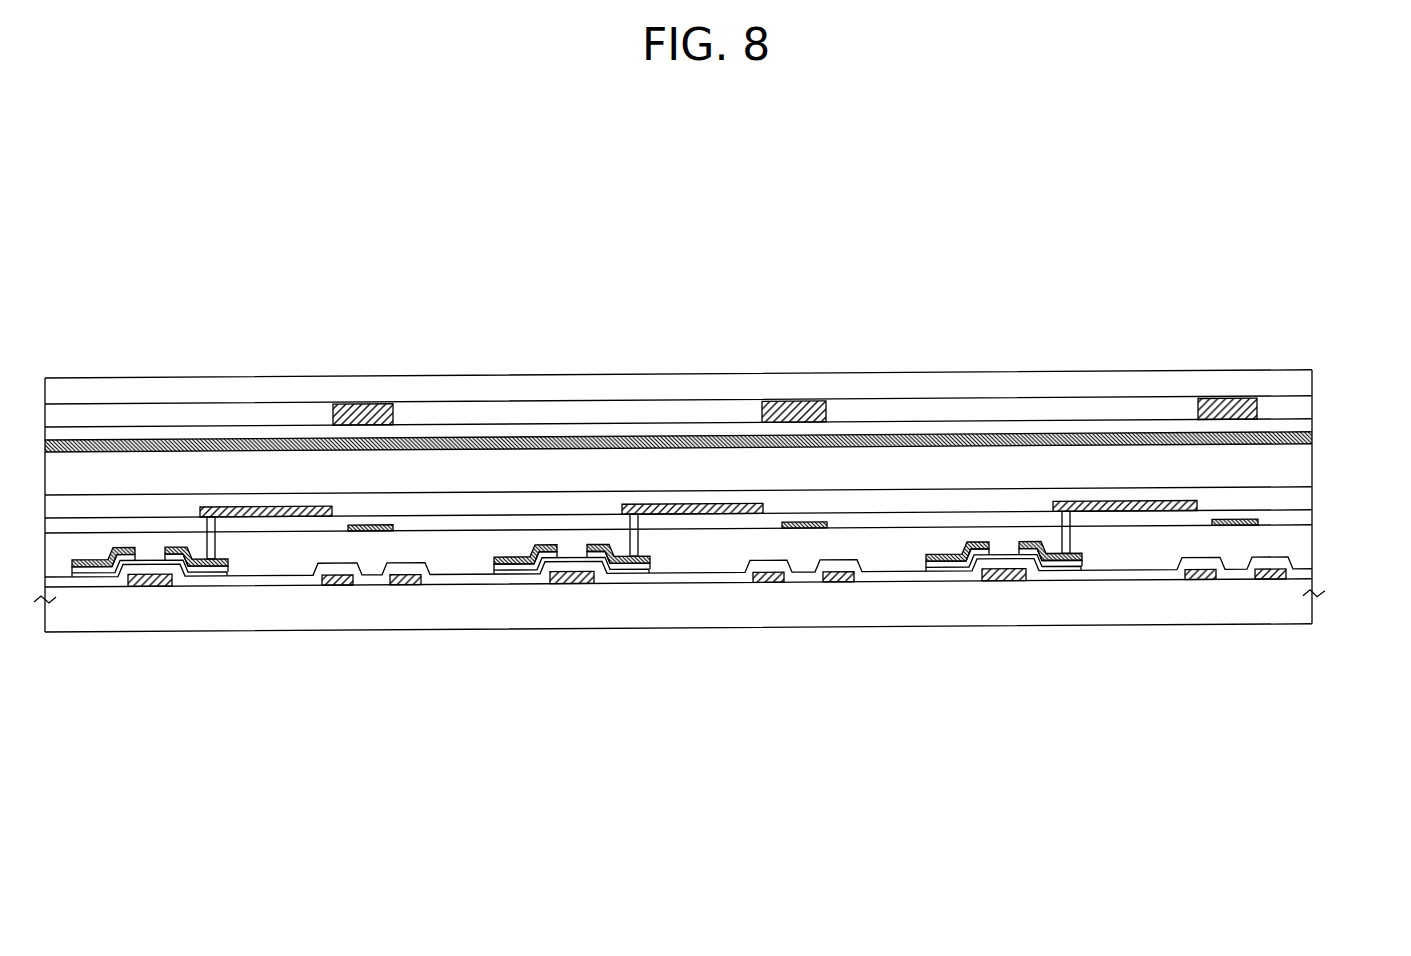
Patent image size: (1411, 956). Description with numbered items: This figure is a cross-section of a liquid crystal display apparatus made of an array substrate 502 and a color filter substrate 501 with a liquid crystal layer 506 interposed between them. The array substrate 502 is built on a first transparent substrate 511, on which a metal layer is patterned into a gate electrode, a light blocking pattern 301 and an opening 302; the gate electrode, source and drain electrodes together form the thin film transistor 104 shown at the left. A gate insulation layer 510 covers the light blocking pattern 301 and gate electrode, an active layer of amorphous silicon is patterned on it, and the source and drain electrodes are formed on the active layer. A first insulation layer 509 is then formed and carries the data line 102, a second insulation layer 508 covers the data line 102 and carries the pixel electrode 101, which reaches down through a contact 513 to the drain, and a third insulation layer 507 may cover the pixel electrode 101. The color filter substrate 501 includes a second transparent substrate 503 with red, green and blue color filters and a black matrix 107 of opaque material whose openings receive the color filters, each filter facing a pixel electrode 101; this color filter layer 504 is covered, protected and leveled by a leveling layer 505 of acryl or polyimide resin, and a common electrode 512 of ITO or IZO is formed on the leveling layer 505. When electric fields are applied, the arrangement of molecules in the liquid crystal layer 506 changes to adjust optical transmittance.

The pixel electrode 101 is at (725, 503).
The data line 102 is at (795, 525).
The thin film transistor 104 is at (222, 692).
The black matrix 107 is at (350, 403).
The light blocking pattern 301 is at (338, 587).
The opening 302 is at (808, 583).
The color filter substrate 501 is at (1320, 372).
The array substrate 502 is at (1320, 622).
The second transparent substrate 503 is at (1064, 382).
The color filter layer 504 is at (1118, 408).
The leveling layer 505 is at (1282, 428).
The liquid crystal layer 506 is at (1241, 462).
The third insulation layer 507 is at (931, 502).
The second insulation layer 508 is at (837, 528).
The first insulation layer 509 is at (870, 547).
The gate insulation layer 510 is at (693, 580).
The first transparent substrate 511 is at (906, 613).
The common electrode 512 is at (1213, 432).
The contact hole 513 is at (1067, 543).